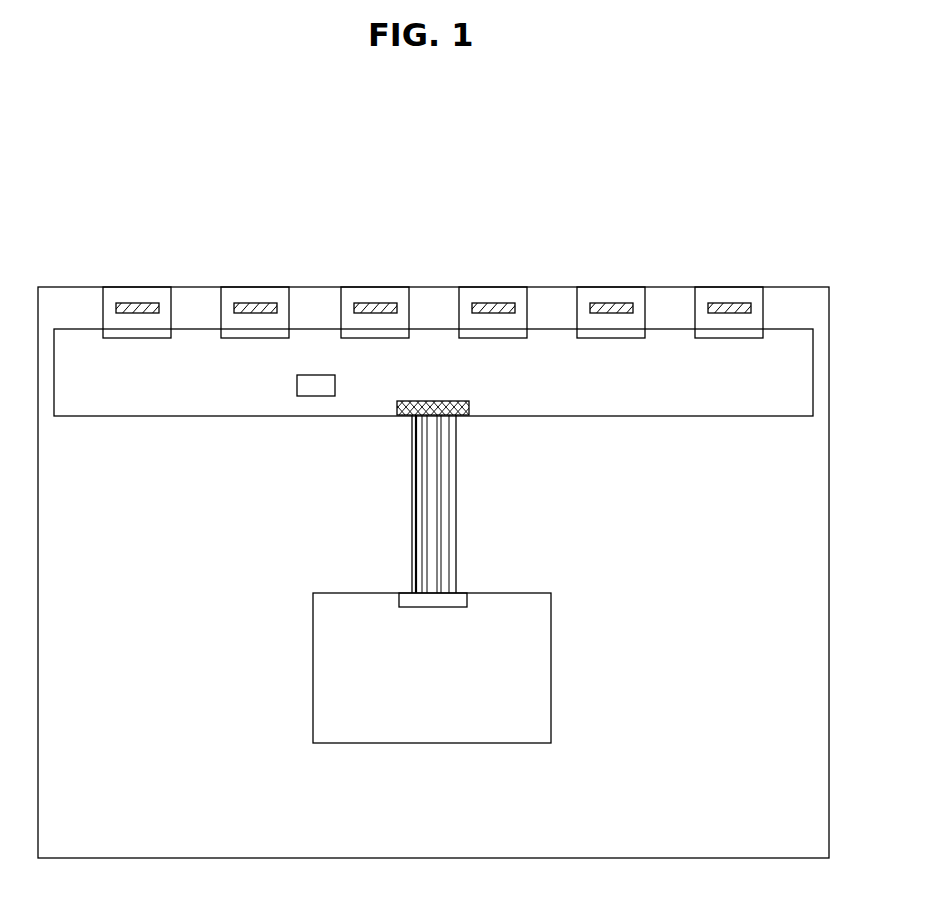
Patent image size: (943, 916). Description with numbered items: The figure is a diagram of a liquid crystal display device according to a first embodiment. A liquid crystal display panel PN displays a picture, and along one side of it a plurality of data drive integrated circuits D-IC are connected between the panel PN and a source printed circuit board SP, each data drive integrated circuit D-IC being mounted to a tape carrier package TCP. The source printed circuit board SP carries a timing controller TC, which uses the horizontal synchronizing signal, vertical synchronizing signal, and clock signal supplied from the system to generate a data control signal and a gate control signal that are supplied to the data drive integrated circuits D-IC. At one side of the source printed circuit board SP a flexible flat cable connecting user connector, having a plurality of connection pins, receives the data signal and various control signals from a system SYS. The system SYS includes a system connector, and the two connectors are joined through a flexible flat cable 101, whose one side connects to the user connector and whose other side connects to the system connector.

The liquid crystal display panel PN is at (799, 287).
The source printed circuit board SP is at (786, 417).
The tape carrier package TCP is at (103, 298).
The data drive integrated circuit D-IC is at (137, 303).
The timing controller TC is at (316, 396).
The flexible flat cable 101 is at (456, 503).
The system SYS is at (551, 667).